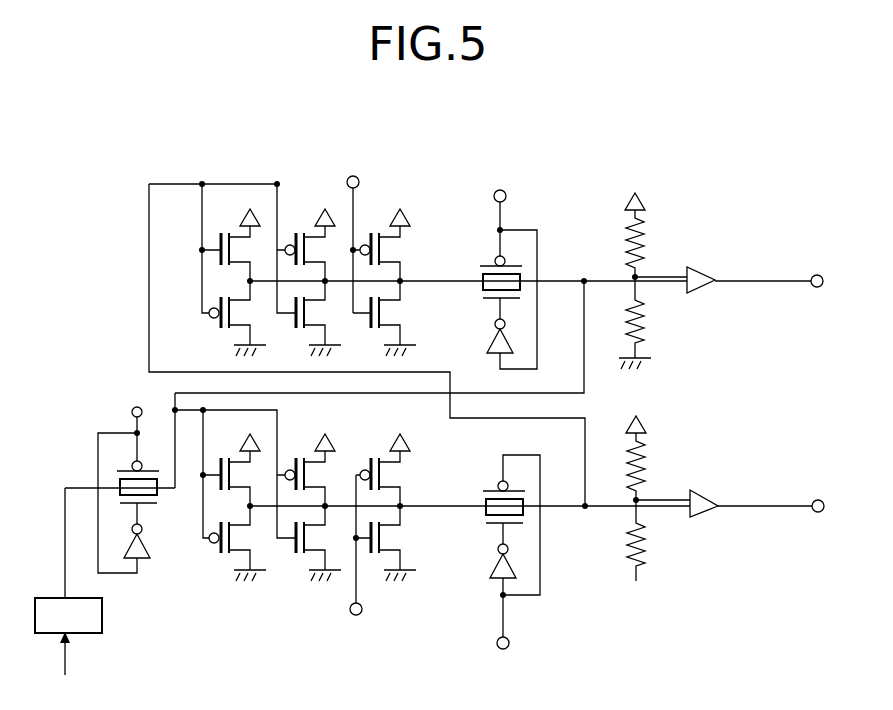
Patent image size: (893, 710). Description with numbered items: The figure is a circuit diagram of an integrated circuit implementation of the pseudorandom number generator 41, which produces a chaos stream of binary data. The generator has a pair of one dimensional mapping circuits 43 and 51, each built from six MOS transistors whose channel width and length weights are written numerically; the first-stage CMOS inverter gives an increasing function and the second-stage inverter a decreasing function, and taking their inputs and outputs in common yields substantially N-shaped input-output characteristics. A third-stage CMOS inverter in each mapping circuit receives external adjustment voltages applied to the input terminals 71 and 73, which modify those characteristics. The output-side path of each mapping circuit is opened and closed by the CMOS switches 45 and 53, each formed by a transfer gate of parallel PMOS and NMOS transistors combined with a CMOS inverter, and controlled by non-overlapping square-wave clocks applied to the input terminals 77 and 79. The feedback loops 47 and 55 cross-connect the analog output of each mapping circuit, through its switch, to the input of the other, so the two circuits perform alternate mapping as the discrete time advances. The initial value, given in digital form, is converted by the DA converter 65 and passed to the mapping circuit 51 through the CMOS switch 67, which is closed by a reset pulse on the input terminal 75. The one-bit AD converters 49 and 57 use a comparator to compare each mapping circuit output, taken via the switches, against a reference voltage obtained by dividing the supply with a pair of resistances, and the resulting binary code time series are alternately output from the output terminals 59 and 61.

The pseudorandom number generator 41 is at (646, 131).
The one dimensional mapping circuit 43 is at (380, 210).
The CMOS switch 45 is at (535, 212).
The feedback loop 47 is at (586, 393).
The AD converter 49 is at (672, 234).
The one dimensional mapping circuit 51 is at (301, 574).
The CMOS switch 53 is at (474, 554).
The feedback loop 55 is at (462, 418).
The AD converter 57 is at (671, 466).
The output terminal 59 is at (817, 274).
The output terminal 61 is at (818, 500).
The DA converter 65 is at (102, 615).
The CMOS switch 67 is at (158, 538).
The input terminal 71 is at (354, 176).
The input terminal 73 is at (356, 615).
The input terminal 75 is at (132, 412).
The input terminal 77 is at (500, 188).
The input terminal 79 is at (503, 649).